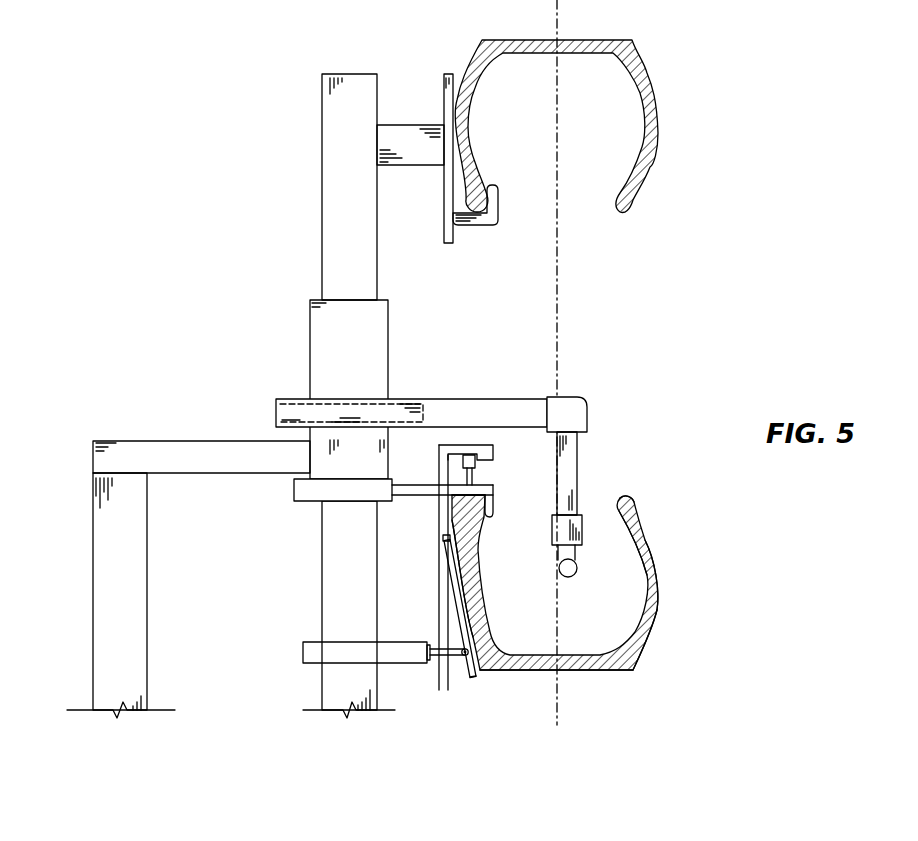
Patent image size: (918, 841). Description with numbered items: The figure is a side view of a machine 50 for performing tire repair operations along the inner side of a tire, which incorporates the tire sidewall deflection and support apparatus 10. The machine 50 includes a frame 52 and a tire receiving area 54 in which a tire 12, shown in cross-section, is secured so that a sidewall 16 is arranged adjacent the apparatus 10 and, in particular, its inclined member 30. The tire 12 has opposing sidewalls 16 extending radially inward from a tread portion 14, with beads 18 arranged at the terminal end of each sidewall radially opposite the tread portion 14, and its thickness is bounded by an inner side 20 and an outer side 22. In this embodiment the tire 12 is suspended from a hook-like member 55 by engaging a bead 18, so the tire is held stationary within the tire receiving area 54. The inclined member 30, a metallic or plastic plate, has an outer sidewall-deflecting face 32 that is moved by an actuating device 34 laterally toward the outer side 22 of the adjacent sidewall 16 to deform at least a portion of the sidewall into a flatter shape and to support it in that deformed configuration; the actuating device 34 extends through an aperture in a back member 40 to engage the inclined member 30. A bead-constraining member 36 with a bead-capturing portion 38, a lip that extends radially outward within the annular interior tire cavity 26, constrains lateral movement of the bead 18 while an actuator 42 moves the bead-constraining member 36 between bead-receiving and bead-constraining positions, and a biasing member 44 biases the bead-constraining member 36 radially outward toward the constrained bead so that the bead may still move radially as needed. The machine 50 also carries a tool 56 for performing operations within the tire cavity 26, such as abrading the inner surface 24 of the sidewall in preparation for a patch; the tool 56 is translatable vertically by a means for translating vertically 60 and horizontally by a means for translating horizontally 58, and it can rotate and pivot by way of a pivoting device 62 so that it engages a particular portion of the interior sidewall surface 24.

The tire sidewall deflection and support apparatus 10 is at (457, 682).
The tire 12 is at (502, 40).
The tread portion 14 is at (596, 671).
The sidewall 16 is at (478, 583).
The bead 18 is at (486, 513).
The inner side 20 is at (616, 511).
The outer side 22 is at (636, 669).
The inner surface of the sidewall 24 is at (490, 636).
The annular interior tire cavity 26 is at (605, 636).
The inclined member 30 is at (468, 682).
The sidewall-deflecting face 32 is at (478, 674).
The actuating device 34 is at (303, 649).
The bead-constraining member 36 is at (486, 485).
The bead-capturing portion 38 is at (494, 506).
The back member 40 is at (438, 679).
The actuator 42 is at (294, 489).
The biasing member 44 is at (476, 466).
The machine 50 is at (160, 110).
The frame 52 is at (93, 565).
The tire receiving area 54 is at (614, 287).
The hook-like member 55 is at (486, 226).
The tool 56 is at (578, 447).
The means for translating horizontally 58 is at (287, 415).
The means for translating vertically 60 is at (565, 397).
The pivoting device 62 is at (583, 530).